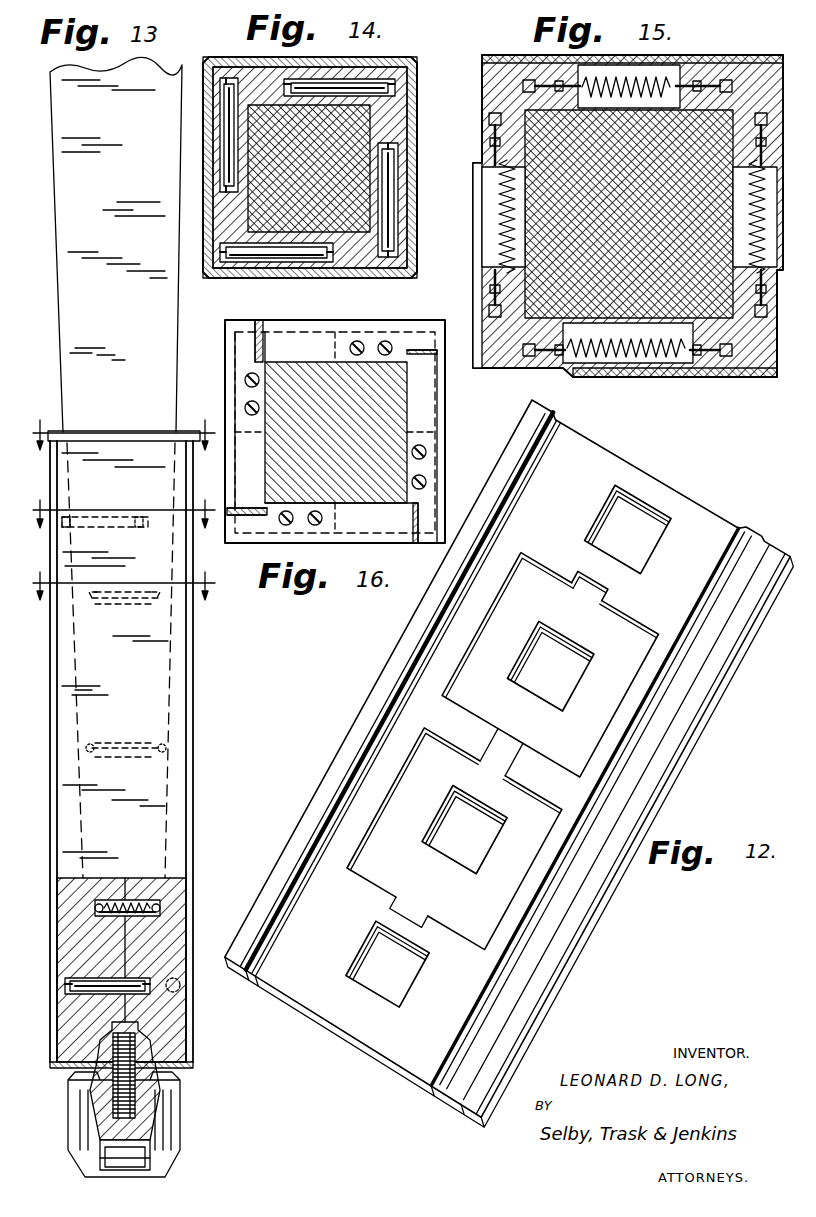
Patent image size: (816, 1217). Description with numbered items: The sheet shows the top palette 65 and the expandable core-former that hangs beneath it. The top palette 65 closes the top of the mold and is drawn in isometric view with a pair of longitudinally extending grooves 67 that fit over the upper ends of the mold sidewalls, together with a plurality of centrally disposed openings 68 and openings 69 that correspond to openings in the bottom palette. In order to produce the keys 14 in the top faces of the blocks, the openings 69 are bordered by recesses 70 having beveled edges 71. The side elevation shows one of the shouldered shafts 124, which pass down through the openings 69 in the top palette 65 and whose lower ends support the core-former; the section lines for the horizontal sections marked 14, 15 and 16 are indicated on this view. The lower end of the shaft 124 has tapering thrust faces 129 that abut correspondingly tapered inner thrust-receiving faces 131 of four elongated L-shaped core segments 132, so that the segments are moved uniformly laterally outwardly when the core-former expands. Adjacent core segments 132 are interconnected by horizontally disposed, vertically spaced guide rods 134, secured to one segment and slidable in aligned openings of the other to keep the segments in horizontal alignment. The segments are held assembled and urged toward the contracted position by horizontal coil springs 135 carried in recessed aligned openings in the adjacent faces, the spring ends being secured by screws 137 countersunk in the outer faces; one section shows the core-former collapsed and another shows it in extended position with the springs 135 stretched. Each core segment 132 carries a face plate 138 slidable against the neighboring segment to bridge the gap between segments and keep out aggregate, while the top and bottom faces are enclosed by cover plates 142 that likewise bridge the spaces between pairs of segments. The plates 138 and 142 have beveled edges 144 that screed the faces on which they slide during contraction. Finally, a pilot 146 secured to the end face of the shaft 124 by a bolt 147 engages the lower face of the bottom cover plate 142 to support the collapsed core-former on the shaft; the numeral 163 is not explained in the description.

In FIG. 12, the top palette 65 is at (345, 1008).
In FIG. 12, the longitudinally extending grooves 67 is at (260, 974).
In FIG. 12, the openings 68 is at (380, 962).
In FIG. 12, the openings 69 is at (447, 842).
In FIG. 12, the recesses 70 is at (397, 880).
In FIG. 12, the beveled edges 71 is at (497, 780).
In FIG. 13, the shafts 124 is at (153, 350).
In FIG. 14, the shafts 124 is at (345, 143).
In FIG. 15, the shafts 124 is at (500, 228).
In FIG. 16, the shafts 124 is at (376, 458).
In FIG. 13, the tapering thrust faces 129 is at (150, 395).
In FIG. 14, the thrust-receiving faces 131 is at (352, 224).
In FIG. 13, the core segments 132 is at (165, 940).
In FIG. 14, the core segments 132 is at (358, 255).
In FIG. 15, the core segments 132 is at (490, 82).
In FIG. 13, the guide rods 134 is at (82, 982).
In FIG. 14, the guide rods 134 is at (386, 214).
In FIG. 15, the guide rods 134 is at (490, 210).
In FIG. 13, the coil springs 135 is at (150, 745).
In FIG. 15, the coil springs 135 is at (660, 347).
In FIG. 13, the screws 137 is at (165, 907).
In FIG. 15, the screws 137 is at (720, 352).
In FIG. 13, the face plate 138 is at (175, 776).
In FIG. 14, the face plate 138 is at (283, 282).
In FIG. 15, the face plate 138 is at (607, 372).
In FIG. 13, the cover plates 142 is at (155, 1068).
In FIG. 16, the cover plates 142 is at (428, 453).
In FIG. 13, the beveled edges 144 is at (192, 665).
In FIG. 14, the beveled edges 144 is at (217, 280).
In FIG. 15, the beveled edges 144 is at (575, 372).
In FIG. 13, the pilots 146 is at (165, 1115).
In FIG. 13, the bolts 147 is at (130, 1156).
In FIG. 16, the retaining screw 163 is at (420, 446).
In FIG. 13, the keys 14 is at (122, 525).
In FIG. 13, the section line 15 is at (123, 596).
In FIG. 13, the section line 16 is at (123, 445).